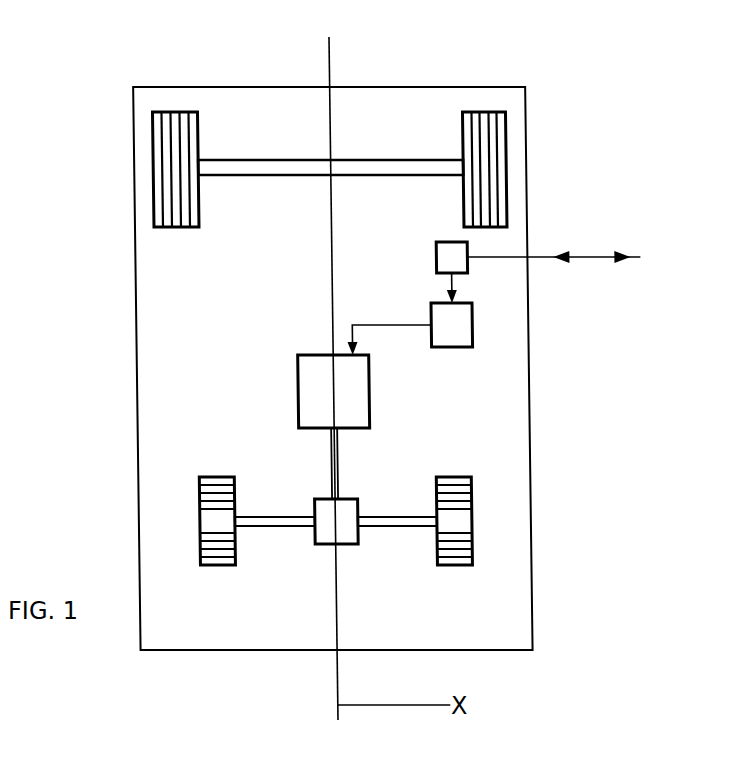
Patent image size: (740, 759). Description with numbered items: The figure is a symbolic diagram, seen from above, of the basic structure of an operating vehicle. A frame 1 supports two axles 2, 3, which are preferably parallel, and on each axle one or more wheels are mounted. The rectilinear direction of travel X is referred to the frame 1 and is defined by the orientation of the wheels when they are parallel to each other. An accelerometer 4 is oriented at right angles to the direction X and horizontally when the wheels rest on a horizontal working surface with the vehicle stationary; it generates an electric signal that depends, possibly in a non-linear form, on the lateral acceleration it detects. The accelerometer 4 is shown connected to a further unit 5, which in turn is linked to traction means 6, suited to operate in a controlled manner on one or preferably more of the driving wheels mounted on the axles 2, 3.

The frame 1 is at (130, 383).
The axle 2 is at (385, 168).
The axle 3 is at (263, 520).
The accelerometer 4 is at (492, 257).
The evaluation unit 5 is at (456, 325).
The traction means 6 is at (350, 395).